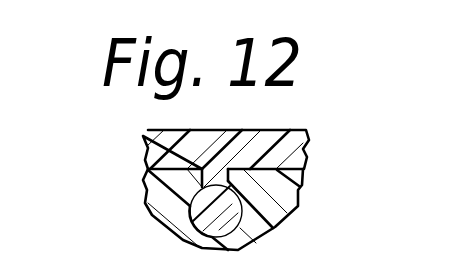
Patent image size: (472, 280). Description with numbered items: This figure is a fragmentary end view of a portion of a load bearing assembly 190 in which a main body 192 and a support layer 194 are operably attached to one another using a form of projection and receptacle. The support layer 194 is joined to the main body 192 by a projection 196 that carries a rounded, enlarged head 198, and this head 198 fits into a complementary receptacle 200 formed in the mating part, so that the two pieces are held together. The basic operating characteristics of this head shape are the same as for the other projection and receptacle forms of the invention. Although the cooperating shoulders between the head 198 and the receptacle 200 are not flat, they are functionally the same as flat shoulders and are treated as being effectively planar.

The load bearing assembly 190 is at (315, 168).
The main body 192 is at (164, 215).
The support layer 194 is at (168, 130).
The projection 196 is at (225, 205).
The rounded, enlarged head 198 is at (227, 229).
The receptacle 200 is at (188, 208).